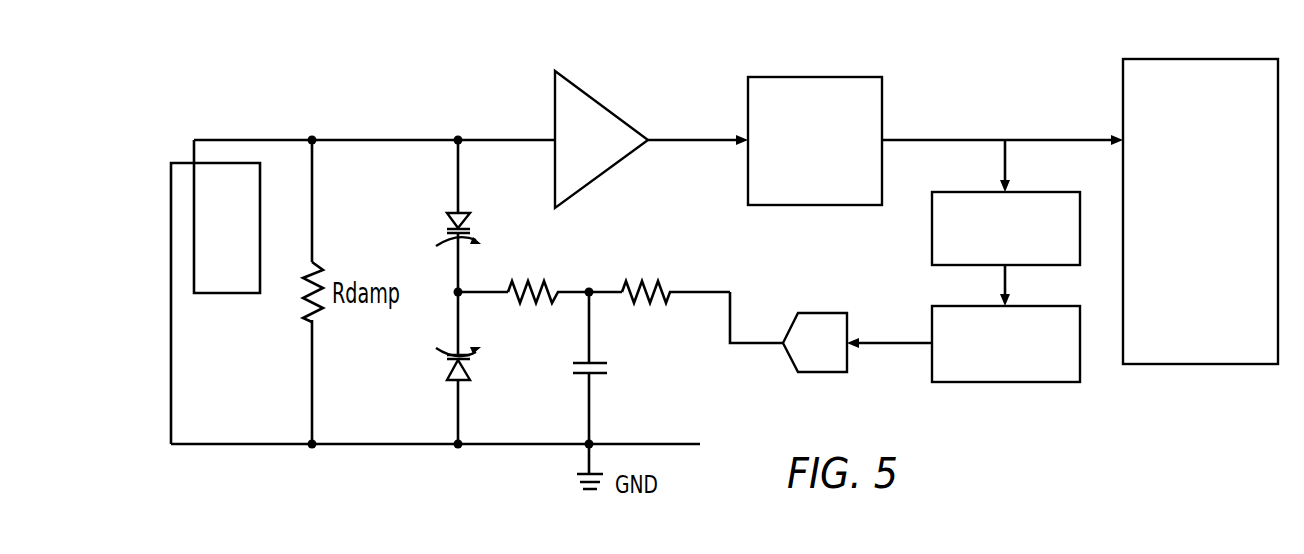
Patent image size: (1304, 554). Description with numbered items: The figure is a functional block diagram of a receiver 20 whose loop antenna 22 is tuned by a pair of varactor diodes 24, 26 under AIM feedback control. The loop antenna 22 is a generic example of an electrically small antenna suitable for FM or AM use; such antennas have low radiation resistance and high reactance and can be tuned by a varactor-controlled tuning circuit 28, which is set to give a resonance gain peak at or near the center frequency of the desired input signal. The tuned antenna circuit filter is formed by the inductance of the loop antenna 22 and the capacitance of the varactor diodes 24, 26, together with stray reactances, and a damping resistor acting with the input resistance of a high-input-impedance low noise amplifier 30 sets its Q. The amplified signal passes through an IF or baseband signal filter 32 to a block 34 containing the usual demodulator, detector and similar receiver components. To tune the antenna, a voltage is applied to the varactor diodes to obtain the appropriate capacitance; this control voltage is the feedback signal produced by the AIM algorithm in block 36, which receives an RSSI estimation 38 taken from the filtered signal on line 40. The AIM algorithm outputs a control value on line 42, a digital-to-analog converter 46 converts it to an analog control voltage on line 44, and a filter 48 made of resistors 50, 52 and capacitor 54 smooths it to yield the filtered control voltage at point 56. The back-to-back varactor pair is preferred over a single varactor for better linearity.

The receiver 20 is at (968, 86).
The loop antenna 22 is at (221, 279).
The varactor diode 24 is at (467, 222).
The varactor diode 26 is at (446, 370).
The varactor-controlled tuning circuit 28 is at (410, 209).
The low noise amplifier 30 is at (598, 100).
The IF or baseband signal filter 32 is at (825, 77).
The demodulator, detector, etc. block 34 is at (1200, 364).
The AIM algorithm block 36 is at (989, 382).
The RSSI estimation 38 is at (1040, 192).
The line 40 is at (922, 140).
The line 42 is at (890, 345).
The line 44 is at (757, 345).
The digital-to-analog converter 46 is at (818, 313).
The filter 48 is at (605, 276).
The resistor 50 is at (518, 282).
The resistor 52 is at (640, 280).
The capacitor 54 is at (607, 370).
The point 56 is at (454, 292).